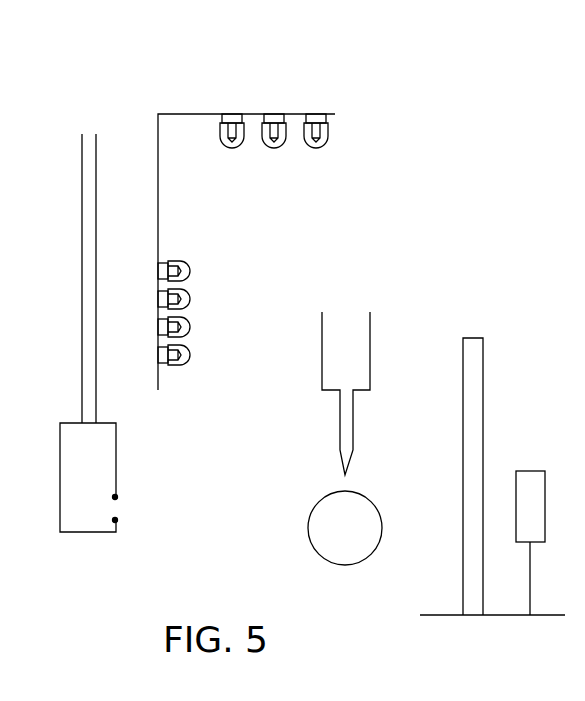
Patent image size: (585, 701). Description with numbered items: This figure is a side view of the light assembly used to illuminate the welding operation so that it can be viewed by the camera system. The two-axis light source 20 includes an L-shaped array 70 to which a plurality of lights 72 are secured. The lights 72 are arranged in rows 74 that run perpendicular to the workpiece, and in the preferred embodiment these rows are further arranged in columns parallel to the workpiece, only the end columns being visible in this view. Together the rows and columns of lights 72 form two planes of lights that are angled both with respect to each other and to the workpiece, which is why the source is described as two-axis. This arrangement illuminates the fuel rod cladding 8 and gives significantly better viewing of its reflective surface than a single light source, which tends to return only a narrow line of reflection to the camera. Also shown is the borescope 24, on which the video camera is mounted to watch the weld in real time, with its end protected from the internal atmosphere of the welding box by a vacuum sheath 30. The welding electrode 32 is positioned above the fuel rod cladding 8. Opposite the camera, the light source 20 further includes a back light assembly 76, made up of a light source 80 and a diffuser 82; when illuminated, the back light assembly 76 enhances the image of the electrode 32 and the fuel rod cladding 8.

The 2-axis light source 20 is at (471, 170).
The L-shaped array 70 is at (187, 114).
The lights 72 is at (289, 138).
The row of lights 74 is at (283, 145).
The borescope 24 is at (82, 283).
The vacuum sheath 30 is at (117, 507).
The electrode 32 is at (350, 462).
The fuel rod cladding 8 is at (335, 538).
The back light assembly 76 is at (484, 422).
The diffuser 82 is at (463, 458).
The light source 80 is at (546, 487).